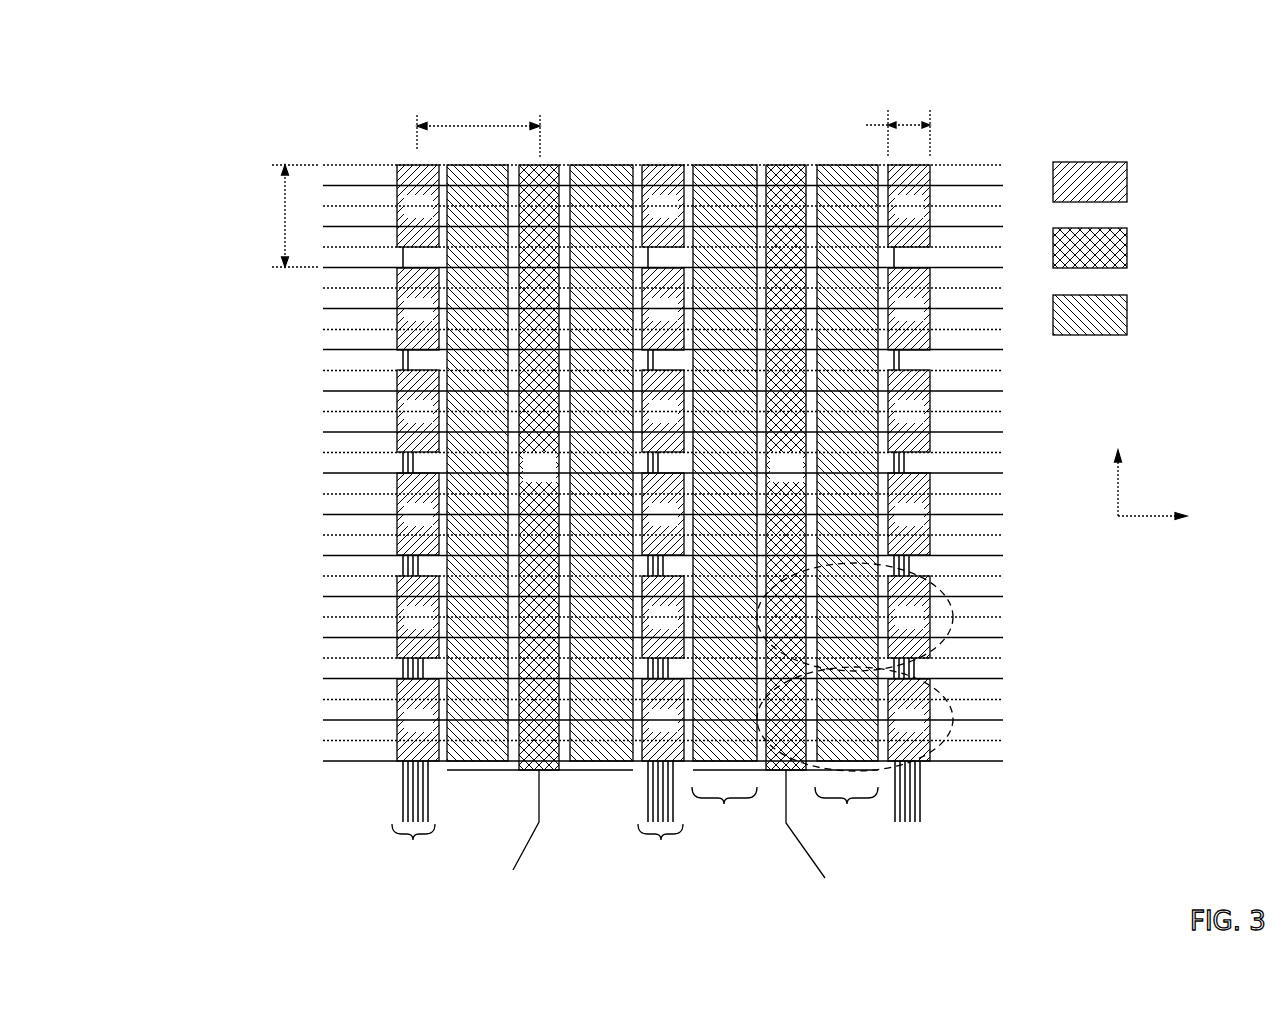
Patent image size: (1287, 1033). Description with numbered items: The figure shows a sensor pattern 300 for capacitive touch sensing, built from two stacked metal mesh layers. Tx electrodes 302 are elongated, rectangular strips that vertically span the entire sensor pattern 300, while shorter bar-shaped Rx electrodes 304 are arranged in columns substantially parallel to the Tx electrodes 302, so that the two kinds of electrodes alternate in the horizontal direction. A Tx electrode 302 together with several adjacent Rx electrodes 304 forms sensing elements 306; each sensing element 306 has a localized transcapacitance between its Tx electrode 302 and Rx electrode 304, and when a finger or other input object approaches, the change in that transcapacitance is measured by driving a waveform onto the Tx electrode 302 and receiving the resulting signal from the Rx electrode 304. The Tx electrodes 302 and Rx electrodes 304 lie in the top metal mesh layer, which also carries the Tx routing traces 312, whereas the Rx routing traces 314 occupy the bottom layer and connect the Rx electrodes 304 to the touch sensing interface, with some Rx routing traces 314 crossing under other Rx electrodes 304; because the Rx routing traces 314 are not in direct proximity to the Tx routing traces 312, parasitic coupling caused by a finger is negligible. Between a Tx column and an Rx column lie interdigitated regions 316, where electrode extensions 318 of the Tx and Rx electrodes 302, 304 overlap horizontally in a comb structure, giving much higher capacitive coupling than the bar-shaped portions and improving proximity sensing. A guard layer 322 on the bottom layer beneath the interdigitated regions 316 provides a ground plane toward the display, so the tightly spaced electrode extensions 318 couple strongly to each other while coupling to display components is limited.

The sensor pattern 300 is at (1072, 107).
The Tx electrodes 302 is at (775, 180).
The Rx electrodes 304 is at (405, 742).
The sensing elements 306 is at (952, 712).
The Tx routing traces 312 is at (674, 861).
The Rx routing traces 314 is at (413, 841).
The interdigitated regions 316 is at (724, 804).
The electrode extensions 318 is at (597, 218).
The guard layer 322 is at (452, 560).